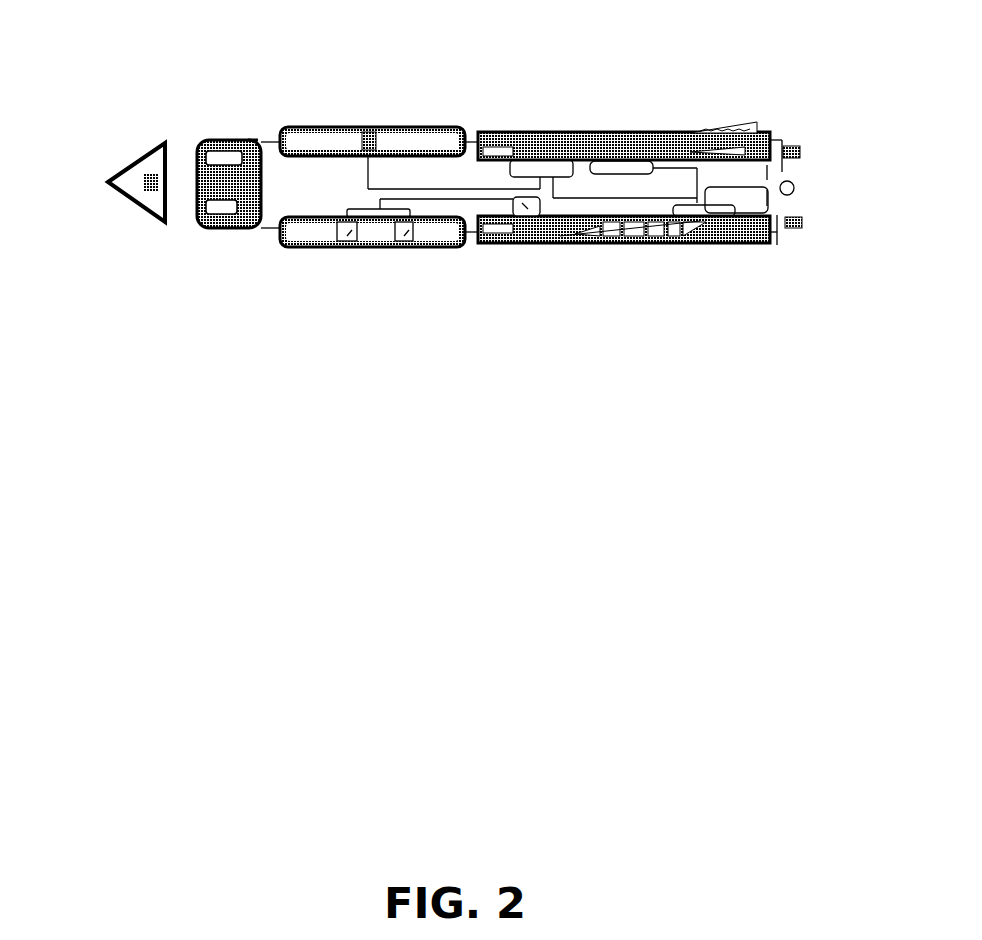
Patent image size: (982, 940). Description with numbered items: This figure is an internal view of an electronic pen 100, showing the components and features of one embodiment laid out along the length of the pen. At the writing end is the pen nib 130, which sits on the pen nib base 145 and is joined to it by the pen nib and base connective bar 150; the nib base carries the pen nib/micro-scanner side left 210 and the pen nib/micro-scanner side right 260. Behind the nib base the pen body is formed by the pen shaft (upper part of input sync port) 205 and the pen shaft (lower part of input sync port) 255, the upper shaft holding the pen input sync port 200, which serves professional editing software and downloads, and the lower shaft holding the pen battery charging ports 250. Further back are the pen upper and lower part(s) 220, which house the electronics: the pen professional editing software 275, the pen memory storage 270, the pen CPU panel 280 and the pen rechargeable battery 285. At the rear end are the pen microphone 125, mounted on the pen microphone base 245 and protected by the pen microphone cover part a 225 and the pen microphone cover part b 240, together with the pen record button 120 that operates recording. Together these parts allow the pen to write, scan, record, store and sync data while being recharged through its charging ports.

The pen 100 is at (529, 243).
The pen record button 120 is at (800, 151).
The pen microphone 125 is at (795, 188).
The pen nib 130 is at (108, 182).
The pen nib base 145 is at (250, 228).
The pen nib and base connective bar 150 is at (252, 140).
The pen input sync port 200 is at (370, 130).
The pen shaft (upper part of input sync port) 205 is at (425, 130).
The pen nib/micro-scanner side left 210 is at (218, 160).
The pen upper and lower part(s) 220 is at (529, 133).
The pen microphone cover part a 225 is at (751, 128).
The pen microphone cover part b 240 is at (802, 222).
The pen microphone base 245 is at (777, 245).
The pen battery charging ports 250 is at (397, 250).
The pen shaft (lower part of input sync port) 255 is at (430, 247).
The pen nib/micro-scanner side right 260 is at (218, 205).
The pen memory storage 270 is at (628, 160).
The pen professional editing software 275 is at (558, 160).
The pen CPU panel 280 is at (714, 243).
The pen rechargeable battery 285 is at (560, 243).